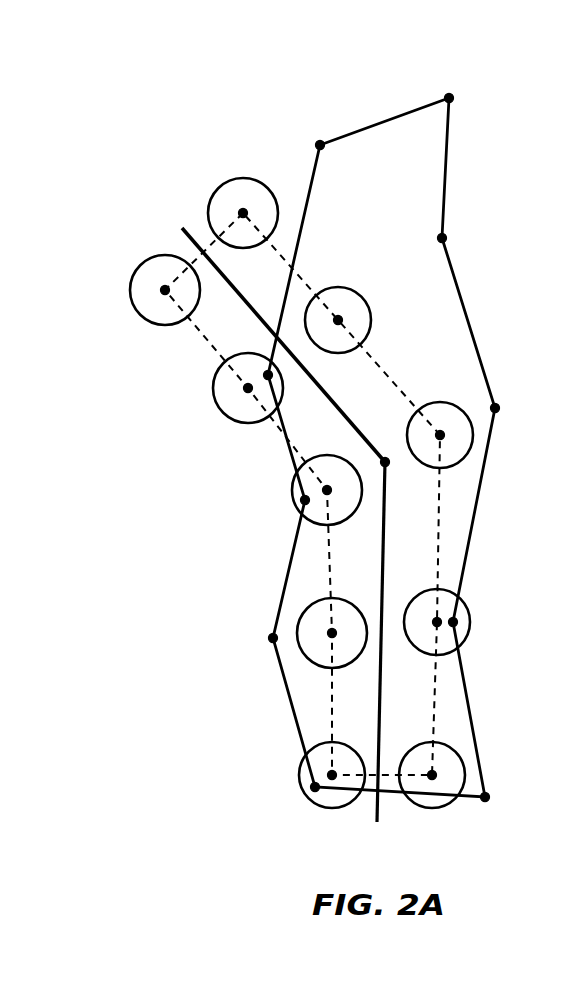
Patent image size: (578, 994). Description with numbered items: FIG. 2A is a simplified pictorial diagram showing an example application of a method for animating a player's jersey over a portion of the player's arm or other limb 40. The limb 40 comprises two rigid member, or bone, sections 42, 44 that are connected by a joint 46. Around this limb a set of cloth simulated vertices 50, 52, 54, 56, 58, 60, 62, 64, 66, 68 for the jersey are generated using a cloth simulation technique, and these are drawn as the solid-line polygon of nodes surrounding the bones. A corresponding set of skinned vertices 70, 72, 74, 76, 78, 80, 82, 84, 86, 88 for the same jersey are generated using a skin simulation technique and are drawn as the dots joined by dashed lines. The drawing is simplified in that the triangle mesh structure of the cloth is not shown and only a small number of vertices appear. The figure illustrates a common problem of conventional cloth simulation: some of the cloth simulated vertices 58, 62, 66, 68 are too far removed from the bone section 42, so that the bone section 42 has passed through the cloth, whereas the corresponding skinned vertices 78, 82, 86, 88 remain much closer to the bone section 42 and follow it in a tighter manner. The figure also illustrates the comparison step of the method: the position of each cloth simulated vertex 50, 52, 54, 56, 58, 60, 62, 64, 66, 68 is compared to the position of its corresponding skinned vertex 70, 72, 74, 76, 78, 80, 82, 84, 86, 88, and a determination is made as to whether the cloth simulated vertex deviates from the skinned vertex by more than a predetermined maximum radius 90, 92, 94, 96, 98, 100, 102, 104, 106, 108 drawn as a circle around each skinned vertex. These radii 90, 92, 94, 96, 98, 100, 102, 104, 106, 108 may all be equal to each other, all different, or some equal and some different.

The limb 40 is at (136, 192).
The rigid member section 42 is at (223, 278).
The rigid member section 44 is at (376, 717).
The joint 46 is at (385, 462).
The cloth simulated vertex 50 is at (485, 797).
The cloth simulated vertex 52 is at (315, 787).
The cloth simulated vertex 54 is at (453, 622).
The cloth simulated vertex 56 is at (273, 638).
The cloth simulated vertex 58 is at (495, 408).
The cloth simulated vertex 60 is at (305, 500).
The cloth simulated vertex 62 is at (442, 238).
The cloth simulated vertex 64 is at (268, 375).
The cloth simulated vertex 66 is at (449, 98).
The cloth simulated vertex 68 is at (320, 145).
The skinned vertex 70 is at (432, 775).
The skinned vertex 72 is at (332, 775).
The skinned vertex 74 is at (437, 622).
The skinned vertex 76 is at (332, 633).
The skinned vertex 78 is at (440, 435).
The skinned vertex 80 is at (327, 490).
The skinned vertex 82 is at (338, 320).
The skinned vertex 84 is at (248, 388).
The skinned vertex 86 is at (243, 213).
The skinned vertex 88 is at (165, 290).
The predetermined maximum radius 90 is at (442, 808).
The predetermined maximum radius 92 is at (325, 808).
The predetermined maximum radius 94 is at (462, 645).
The predetermined maximum radius 96 is at (305, 607).
The predetermined maximum radius 98 is at (448, 402).
The predetermined maximum radius 100 is at (303, 523).
The predetermined maximum radius 102 is at (346, 288).
The predetermined maximum radius 104 is at (250, 423).
The predetermined maximum radius 106 is at (240, 178).
The predetermined maximum radius 108 is at (158, 258).